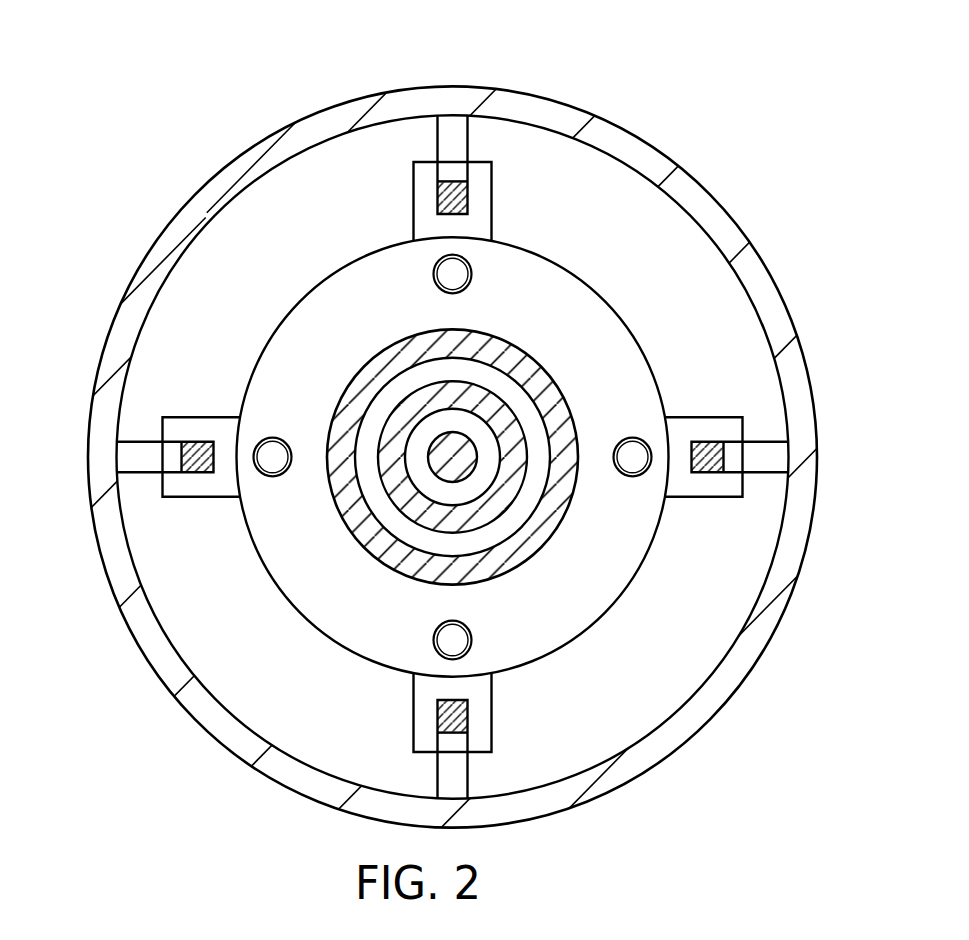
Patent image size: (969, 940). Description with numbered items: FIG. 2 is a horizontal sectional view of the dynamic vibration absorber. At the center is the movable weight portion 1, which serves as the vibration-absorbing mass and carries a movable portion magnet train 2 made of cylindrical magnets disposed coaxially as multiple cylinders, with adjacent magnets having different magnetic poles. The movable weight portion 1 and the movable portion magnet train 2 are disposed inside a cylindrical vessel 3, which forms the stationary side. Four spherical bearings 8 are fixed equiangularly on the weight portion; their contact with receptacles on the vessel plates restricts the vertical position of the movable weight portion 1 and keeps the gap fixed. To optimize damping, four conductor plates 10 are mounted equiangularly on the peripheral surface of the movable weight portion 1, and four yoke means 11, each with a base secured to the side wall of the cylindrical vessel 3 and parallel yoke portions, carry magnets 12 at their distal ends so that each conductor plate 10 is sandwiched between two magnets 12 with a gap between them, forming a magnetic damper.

The movable weight portion 1 is at (572, 291).
The movable portion magnet train 2 is at (465, 460).
The cylindrical vessel 3 is at (691, 185).
The bearings 8 is at (277, 447).
The conductor plates 10 is at (680, 425).
The yoke means 11 is at (769, 442).
The magnets 12 is at (710, 442).